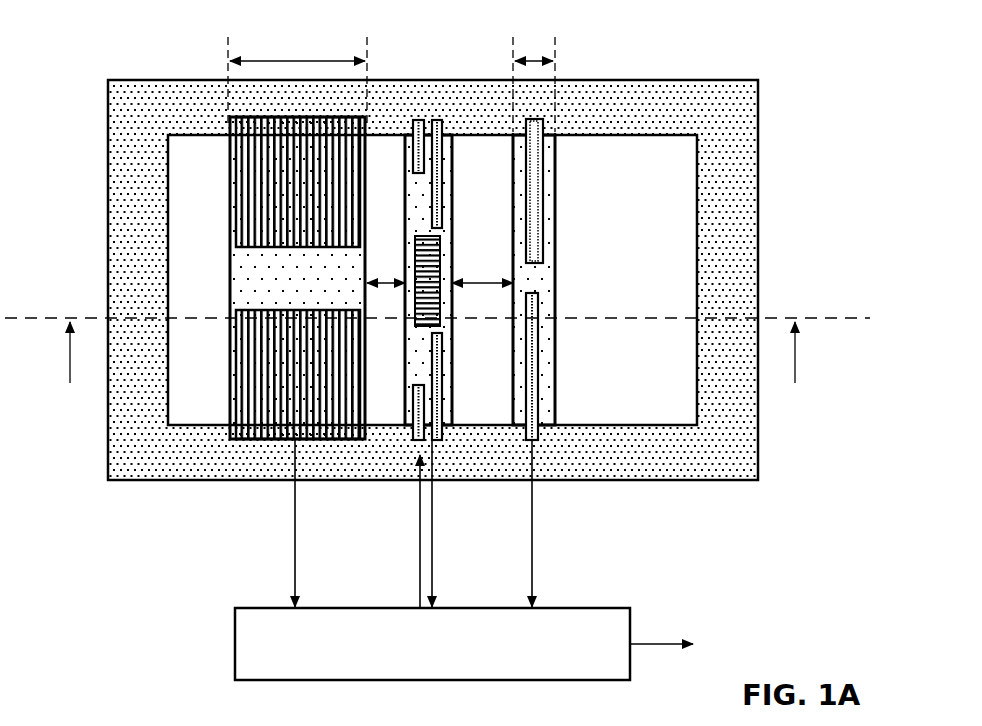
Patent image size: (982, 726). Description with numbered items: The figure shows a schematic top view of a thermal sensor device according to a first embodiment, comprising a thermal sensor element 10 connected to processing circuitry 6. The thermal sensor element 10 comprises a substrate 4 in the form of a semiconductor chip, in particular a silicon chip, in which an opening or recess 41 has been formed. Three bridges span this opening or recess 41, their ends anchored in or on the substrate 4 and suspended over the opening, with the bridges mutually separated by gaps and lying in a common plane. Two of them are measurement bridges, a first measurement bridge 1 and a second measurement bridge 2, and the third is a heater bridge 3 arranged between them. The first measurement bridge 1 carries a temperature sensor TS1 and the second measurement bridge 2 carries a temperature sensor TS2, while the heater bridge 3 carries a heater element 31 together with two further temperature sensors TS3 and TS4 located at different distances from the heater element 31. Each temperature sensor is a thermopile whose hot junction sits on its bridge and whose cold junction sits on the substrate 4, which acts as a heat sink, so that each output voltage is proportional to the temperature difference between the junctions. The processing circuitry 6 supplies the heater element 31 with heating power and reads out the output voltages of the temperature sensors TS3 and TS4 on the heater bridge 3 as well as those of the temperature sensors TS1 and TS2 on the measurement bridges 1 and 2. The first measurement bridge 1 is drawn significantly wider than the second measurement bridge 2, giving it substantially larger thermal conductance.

The thermal sensor element 10 is at (70, 147).
The substrate 4 is at (742, 140).
The opening or recess 41 is at (668, 402).
The first measurement bridge 1 is at (230, 396).
The temperature sensor TS1 is at (240, 339).
The second measurement bridge 2 is at (555, 344).
The temperature sensor TS2 is at (544, 250).
The heater bridge 3 is at (452, 333).
The temperature sensor TS3 is at (442, 186).
The heater element 31 is at (440, 249).
The temperature sensor TS4 is at (418, 121).
The processing circuitry 6 is at (464, 644).